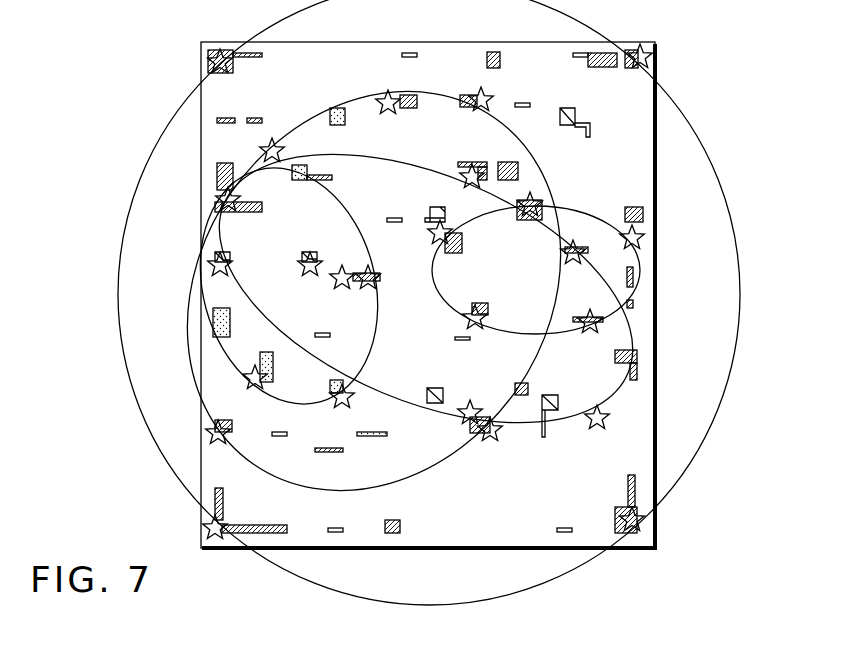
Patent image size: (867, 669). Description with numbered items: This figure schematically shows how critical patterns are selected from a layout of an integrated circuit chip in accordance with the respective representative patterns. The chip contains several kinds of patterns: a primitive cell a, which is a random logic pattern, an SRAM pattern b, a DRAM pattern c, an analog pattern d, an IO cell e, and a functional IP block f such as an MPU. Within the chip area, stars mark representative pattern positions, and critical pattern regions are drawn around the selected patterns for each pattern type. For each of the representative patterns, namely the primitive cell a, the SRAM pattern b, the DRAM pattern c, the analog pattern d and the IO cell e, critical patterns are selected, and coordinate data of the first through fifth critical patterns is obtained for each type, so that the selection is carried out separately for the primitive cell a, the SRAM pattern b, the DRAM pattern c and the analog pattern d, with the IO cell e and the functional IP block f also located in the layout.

The primitive cell a is at (425, 289).
The SRAM pattern b is at (385, 286).
The DRAM pattern c is at (366, 292).
The analog pattern d is at (507, 266).
The IO cell e is at (536, 270).
The functional IP block f is at (374, 291).